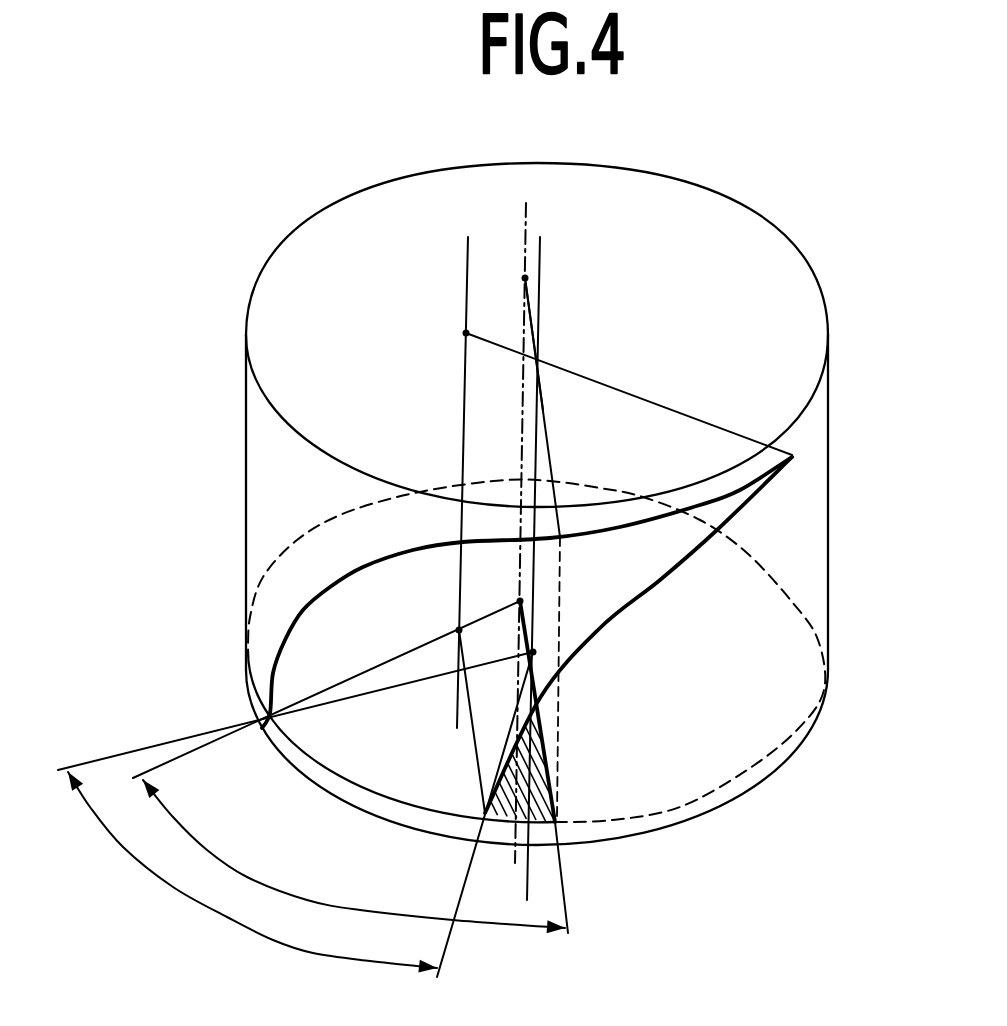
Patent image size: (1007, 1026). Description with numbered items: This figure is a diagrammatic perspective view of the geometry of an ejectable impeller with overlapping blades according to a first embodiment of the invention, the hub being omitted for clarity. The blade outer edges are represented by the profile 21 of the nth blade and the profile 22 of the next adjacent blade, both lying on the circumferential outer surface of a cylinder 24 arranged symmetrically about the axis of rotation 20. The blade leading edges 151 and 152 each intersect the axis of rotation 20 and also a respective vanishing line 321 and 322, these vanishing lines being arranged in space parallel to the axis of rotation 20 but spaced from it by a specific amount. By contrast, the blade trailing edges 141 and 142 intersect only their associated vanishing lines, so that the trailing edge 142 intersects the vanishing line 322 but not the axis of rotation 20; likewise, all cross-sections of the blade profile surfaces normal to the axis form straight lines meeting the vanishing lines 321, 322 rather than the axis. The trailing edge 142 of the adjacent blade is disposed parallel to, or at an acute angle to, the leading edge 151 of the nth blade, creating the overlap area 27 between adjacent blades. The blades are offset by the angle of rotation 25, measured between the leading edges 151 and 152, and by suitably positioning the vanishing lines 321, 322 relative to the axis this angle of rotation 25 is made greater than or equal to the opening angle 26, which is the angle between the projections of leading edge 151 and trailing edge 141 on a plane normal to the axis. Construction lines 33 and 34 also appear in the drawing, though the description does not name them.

The axis of rotation 20 is at (537, 407).
The profile of the nth blade 21 is at (362, 567).
The profile of the (n+1)th blade 22 is at (623, 610).
The cylinder 24 is at (825, 305).
The angle of rotation 25 is at (228, 916).
The opening angle 26 is at (337, 880).
The overlap area 27 is at (540, 777).
The generating line 33 is at (350, 697).
The tooth cross section 34 is at (509, 727).
The blade trailing edge 141 is at (375, 667).
The blade trailing edge 142 is at (474, 750).
The blade leading edge 151 is at (549, 430).
The blade leading edge 152 is at (645, 395).
The vanishing line 321 is at (523, 386).
The vanishing line 322 is at (466, 289).